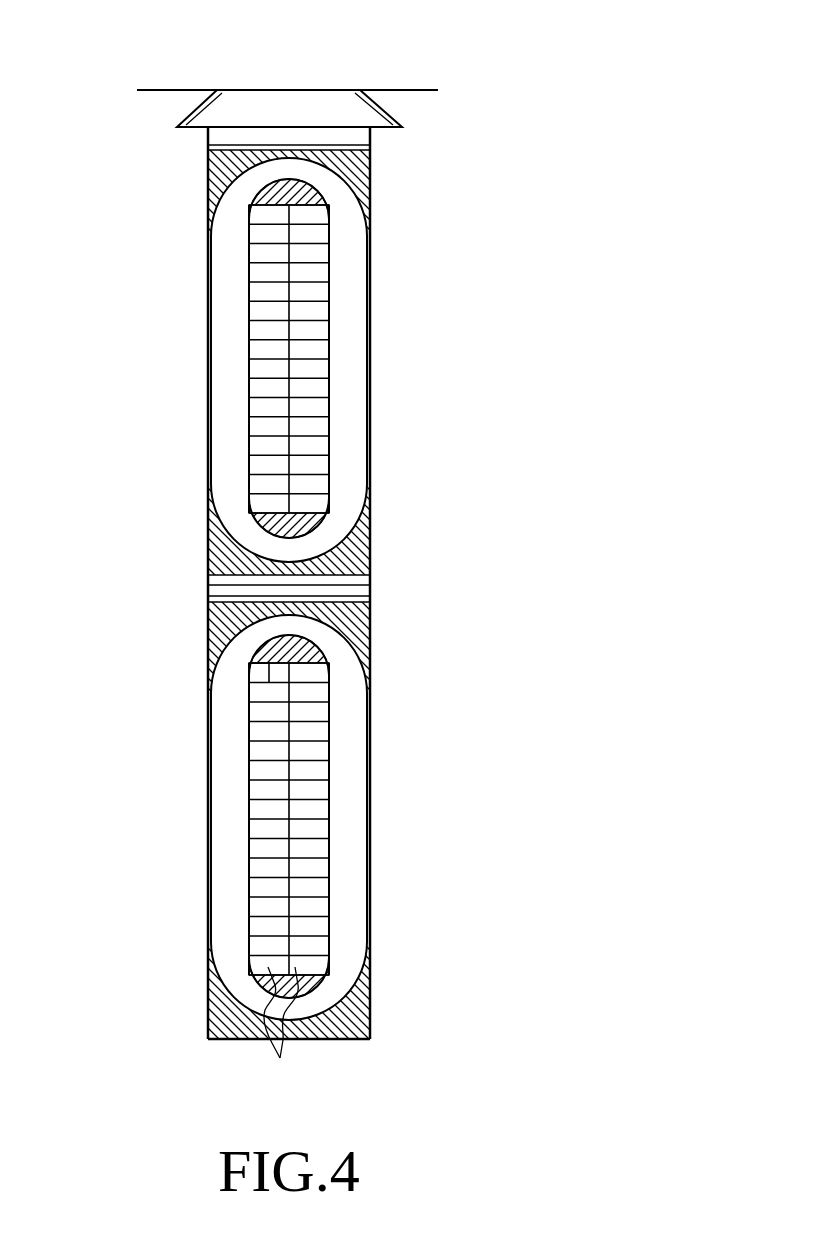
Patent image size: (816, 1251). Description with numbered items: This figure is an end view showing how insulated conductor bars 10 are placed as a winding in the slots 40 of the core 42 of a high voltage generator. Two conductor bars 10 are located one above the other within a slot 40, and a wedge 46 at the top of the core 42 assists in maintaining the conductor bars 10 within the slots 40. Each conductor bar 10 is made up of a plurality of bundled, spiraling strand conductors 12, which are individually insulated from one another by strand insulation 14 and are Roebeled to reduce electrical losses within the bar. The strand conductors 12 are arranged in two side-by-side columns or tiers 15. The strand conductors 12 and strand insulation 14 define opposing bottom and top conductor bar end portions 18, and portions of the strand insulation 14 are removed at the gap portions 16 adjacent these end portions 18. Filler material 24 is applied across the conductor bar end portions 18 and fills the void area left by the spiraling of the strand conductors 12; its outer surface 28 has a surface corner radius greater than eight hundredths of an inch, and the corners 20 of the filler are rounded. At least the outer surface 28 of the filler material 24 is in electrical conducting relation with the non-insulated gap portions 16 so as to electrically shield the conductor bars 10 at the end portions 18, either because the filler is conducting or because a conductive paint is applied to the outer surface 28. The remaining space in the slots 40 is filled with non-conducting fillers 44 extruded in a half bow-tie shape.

The electrical conductor bar 10 is at (152, 633).
The strand conductors 12 is at (313, 252).
The strand insulation 14 is at (315, 443).
The tiers 15 is at (284, 1030).
The non-insulated gap portions 16 is at (307, 214).
The conductor bar end portions 18 is at (350, 193).
The corners of the filler 20 is at (252, 665).
The filler material 24 is at (248, 195).
The outer surface 28 is at (355, 545).
The slots 40 is at (208, 435).
The core 42 is at (170, 208).
The non-conducting fillers 44 is at (195, 1032).
The wedge 46 is at (300, 98).